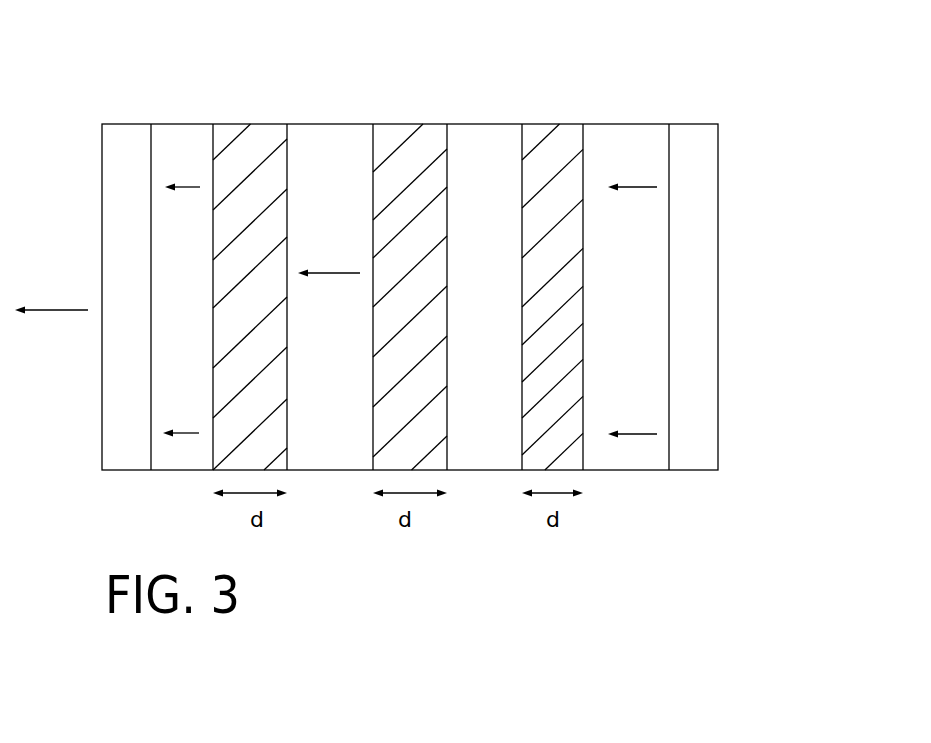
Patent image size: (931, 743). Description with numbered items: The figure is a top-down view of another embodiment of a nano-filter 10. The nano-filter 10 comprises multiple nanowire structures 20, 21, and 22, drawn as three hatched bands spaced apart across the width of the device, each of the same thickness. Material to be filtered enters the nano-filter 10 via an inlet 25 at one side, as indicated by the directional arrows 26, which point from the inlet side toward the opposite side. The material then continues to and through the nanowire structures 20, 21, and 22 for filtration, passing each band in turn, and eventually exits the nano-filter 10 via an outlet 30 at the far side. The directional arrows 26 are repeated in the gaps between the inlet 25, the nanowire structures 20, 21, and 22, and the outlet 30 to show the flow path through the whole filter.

The nano-filter 10 is at (647, 92).
The nanowire structure 20 is at (562, 295).
The nanowire structure 21 is at (426, 307).
The nanowire structure 22 is at (265, 306).
The inlet 25 is at (710, 383).
The directional arrows 26 is at (324, 186).
The outlet 30 is at (143, 383).